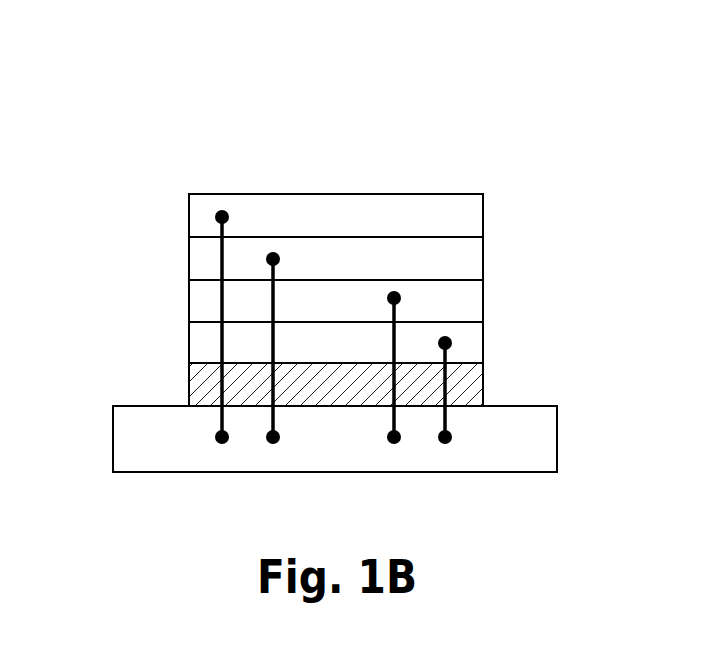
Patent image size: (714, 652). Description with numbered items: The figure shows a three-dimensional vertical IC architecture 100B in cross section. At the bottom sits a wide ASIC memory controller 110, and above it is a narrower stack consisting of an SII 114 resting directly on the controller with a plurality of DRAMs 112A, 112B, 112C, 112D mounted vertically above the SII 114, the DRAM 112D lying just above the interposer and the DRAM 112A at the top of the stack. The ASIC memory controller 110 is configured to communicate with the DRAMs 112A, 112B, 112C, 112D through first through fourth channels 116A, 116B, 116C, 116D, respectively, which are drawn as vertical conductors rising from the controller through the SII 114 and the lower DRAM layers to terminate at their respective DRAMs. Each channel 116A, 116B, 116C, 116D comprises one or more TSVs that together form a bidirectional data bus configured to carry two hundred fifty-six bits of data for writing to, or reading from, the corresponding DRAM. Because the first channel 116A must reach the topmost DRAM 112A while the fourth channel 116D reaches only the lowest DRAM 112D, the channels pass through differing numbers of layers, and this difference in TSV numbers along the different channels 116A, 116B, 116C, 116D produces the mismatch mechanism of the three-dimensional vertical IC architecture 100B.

The 3D vertical IC architecture 100B is at (122, 102).
The ASIC memory controller 110 is at (357, 448).
The DRAM 112A is at (364, 226).
The DRAM 112B is at (364, 270).
The DRAM 112C is at (364, 312).
The DRAM 112D is at (364, 354).
The SII 114 is at (357, 396).
The first channel 116A is at (211, 261).
The second channel 116B is at (263, 305).
The third channel 116C is at (407, 340).
The fourth channel 116D is at (454, 380).